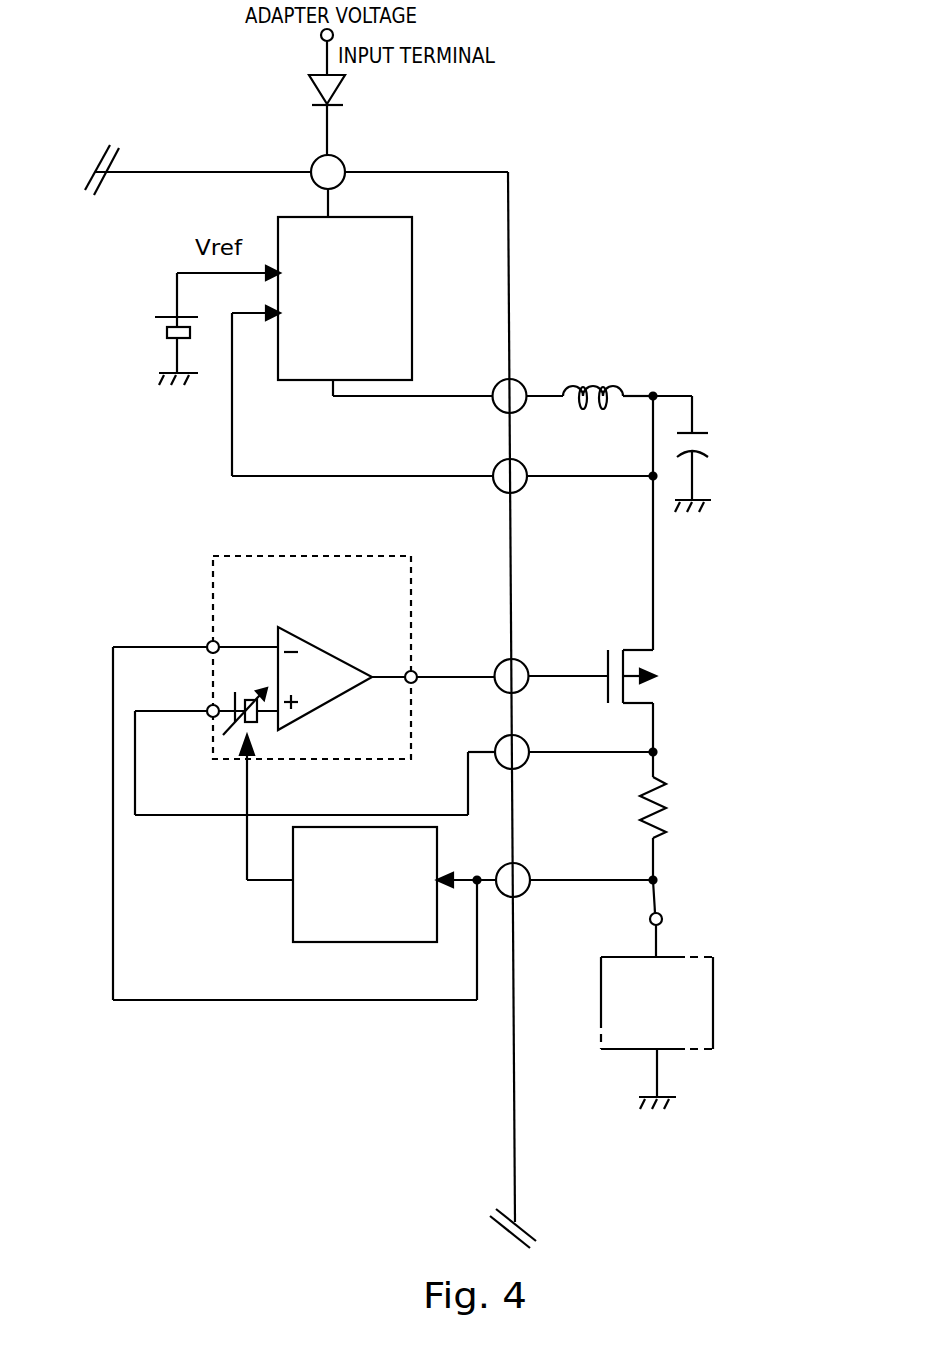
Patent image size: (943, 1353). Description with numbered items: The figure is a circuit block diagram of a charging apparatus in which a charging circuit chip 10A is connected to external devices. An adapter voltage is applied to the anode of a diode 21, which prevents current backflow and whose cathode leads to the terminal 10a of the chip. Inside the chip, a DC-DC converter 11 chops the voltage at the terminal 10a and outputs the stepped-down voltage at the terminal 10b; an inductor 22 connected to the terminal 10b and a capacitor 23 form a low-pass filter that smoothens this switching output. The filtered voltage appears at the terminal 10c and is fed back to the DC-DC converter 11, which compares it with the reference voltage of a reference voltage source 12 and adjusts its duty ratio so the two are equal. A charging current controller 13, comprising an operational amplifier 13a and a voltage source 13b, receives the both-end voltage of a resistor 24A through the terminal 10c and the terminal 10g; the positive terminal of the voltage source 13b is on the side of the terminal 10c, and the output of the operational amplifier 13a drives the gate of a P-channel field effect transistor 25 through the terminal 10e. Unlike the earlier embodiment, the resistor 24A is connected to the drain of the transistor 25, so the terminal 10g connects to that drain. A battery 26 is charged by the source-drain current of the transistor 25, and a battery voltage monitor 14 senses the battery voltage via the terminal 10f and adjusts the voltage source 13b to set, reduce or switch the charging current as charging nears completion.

The diode 21 is at (346, 97).
The external connection terminal 10a is at (342, 160).
The charging circuit chip 10A is at (509, 195).
The DC-DC converter 11 is at (412, 250).
The reference voltage source 12 is at (167, 331).
The external connection terminal 10b is at (522, 383).
The inductor 22 is at (612, 383).
The capacitor 23 is at (705, 447).
The external connection terminal 10c is at (524, 468).
The charging current controller 13 is at (304, 679).
The operational amplifier 13a is at (317, 713).
The voltage source 13b is at (237, 733).
The external connection terminal 10e is at (526, 665).
The P-channel field effect transistor 25 is at (647, 690).
The external connection terminal 10g is at (526, 741).
The resistor 24A is at (667, 797).
The external connection terminal 10f is at (527, 869).
The battery voltage monitor 14 is at (400, 942).
The battery 26 is at (713, 977).